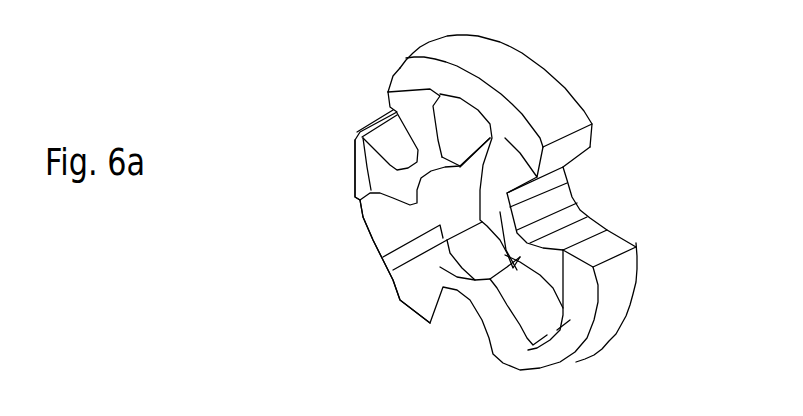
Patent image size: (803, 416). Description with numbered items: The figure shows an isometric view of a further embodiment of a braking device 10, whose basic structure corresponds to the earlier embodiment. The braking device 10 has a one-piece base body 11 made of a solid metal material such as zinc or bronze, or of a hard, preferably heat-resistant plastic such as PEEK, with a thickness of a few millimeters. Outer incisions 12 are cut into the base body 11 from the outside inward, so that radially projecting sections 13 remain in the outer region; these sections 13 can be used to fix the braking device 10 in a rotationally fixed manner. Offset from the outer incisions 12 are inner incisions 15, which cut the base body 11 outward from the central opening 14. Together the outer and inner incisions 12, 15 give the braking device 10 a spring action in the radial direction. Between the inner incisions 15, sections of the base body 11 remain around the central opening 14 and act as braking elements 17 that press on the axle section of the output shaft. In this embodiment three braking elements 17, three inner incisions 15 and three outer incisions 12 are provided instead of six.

The braking device 10 is at (665, 95).
The base body 11 is at (423, 287).
The outer incisions 12 is at (585, 185).
The radially projecting sections 13 is at (540, 92).
The central opening 14 is at (460, 212).
The inner incisions 15 is at (527, 303).
The braking elements 17 is at (406, 163).